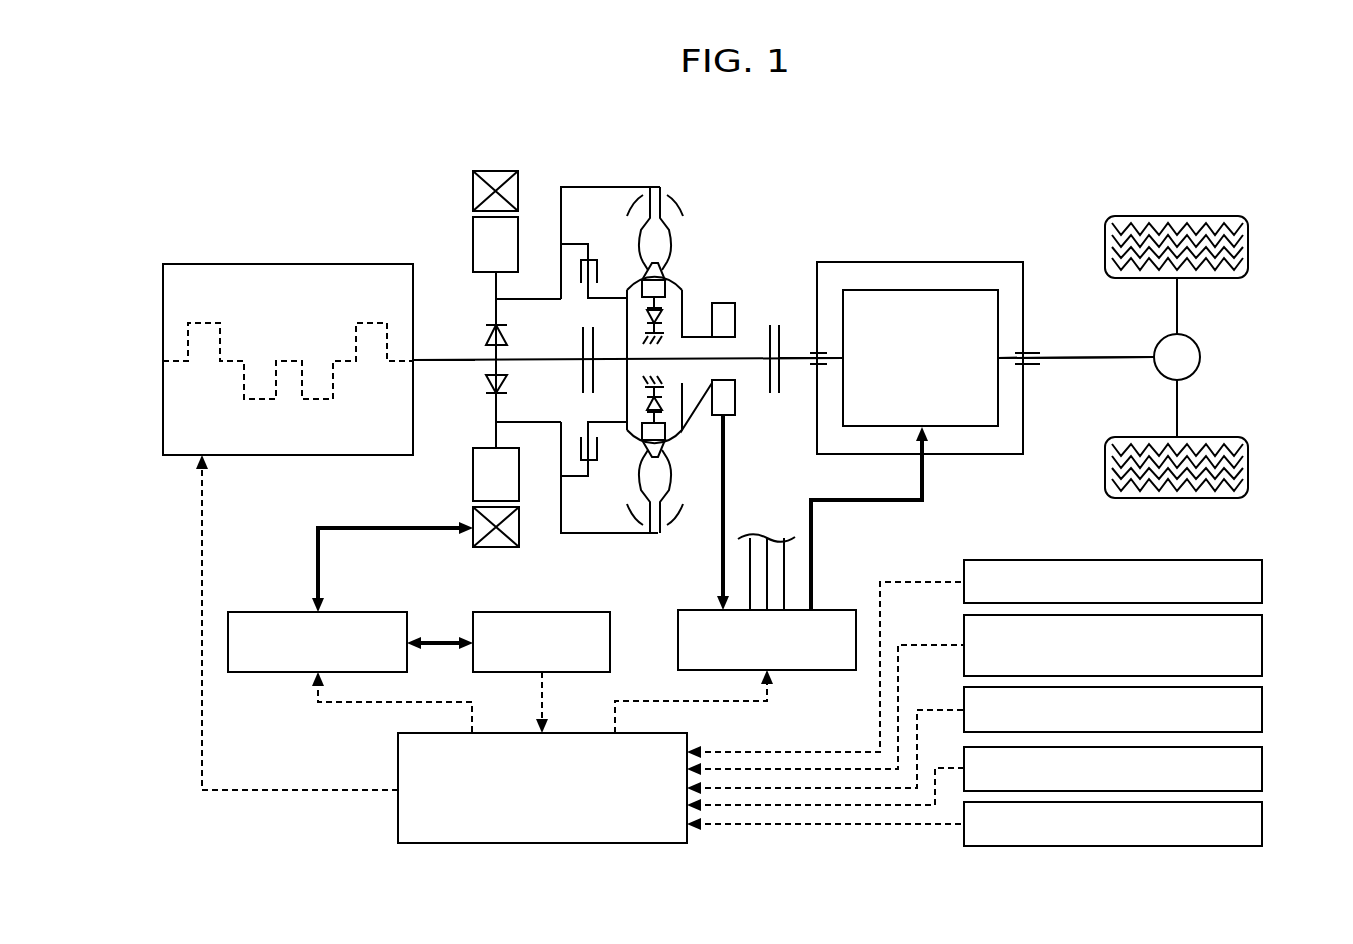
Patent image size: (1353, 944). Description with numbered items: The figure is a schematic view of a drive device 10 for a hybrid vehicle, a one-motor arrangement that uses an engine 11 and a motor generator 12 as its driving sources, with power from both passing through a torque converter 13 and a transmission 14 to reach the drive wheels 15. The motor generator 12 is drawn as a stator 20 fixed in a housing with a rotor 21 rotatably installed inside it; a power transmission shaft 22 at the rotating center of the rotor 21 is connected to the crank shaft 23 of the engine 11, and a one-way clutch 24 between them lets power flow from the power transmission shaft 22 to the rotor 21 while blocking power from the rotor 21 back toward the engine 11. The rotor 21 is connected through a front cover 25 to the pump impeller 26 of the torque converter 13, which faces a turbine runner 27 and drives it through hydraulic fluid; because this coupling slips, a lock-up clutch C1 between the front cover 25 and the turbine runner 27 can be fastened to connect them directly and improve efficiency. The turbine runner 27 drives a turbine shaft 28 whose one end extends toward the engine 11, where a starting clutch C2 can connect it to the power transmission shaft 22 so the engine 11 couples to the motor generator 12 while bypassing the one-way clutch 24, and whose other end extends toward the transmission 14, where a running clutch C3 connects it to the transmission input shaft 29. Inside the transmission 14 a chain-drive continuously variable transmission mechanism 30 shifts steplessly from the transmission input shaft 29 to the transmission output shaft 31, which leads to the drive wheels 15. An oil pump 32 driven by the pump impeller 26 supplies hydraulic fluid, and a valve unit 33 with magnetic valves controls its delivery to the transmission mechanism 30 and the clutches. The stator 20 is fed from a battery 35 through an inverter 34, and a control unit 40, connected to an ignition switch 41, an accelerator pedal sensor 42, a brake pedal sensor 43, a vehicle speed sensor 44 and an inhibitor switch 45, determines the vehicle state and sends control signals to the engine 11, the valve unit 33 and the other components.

The drive device 10 is at (841, 178).
The engine 11 is at (303, 258).
The motor generator 12 is at (455, 178).
The torque converter 13 is at (705, 212).
The transmission 14 is at (960, 255).
The drive wheels 15 is at (1248, 220).
The stator 20 is at (495, 171).
The rotor 21 is at (473, 239).
The power transmission shaft 22 is at (436, 363).
The crank shaft 23 is at (204, 322).
The one-way clutch 24 is at (486, 338).
The front cover 25 is at (561, 262).
The pump impeller 26 is at (677, 210).
The turbine runner 27 is at (630, 212).
The turbine shaft 28 is at (612, 357).
The transmission input shaft 29 is at (800, 357).
The transmission mechanism 30 is at (895, 300).
The transmission output shaft 31 is at (1065, 357).
The oil pump 32 is at (718, 302).
The valve unit 33 is at (832, 610).
The inverter 34 is at (382, 612).
The battery 35 is at (587, 612).
The control unit 40 is at (398, 752).
The ignition switch 41 is at (1263, 582).
The accelerator pedal sensor 42 is at (1263, 645).
The brake pedal sensor 43 is at (1263, 710).
The vehicle speed sensor 44 is at (1263, 768).
The inhibitor switch 45 is at (1263, 824).
The lock-up clutch C1 is at (596, 258).
The starting clutch C2 is at (583, 345).
The running clutch C3 is at (768, 325).